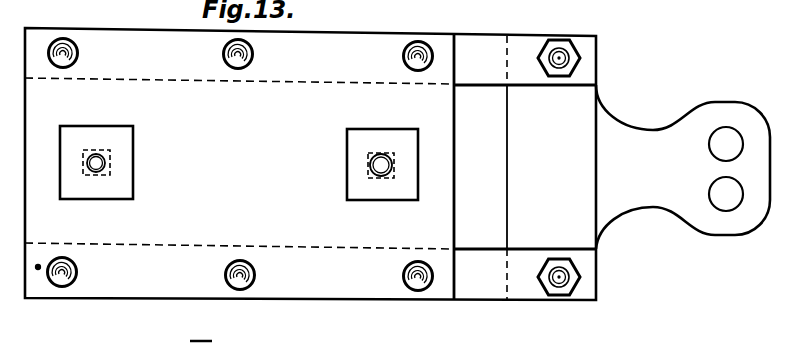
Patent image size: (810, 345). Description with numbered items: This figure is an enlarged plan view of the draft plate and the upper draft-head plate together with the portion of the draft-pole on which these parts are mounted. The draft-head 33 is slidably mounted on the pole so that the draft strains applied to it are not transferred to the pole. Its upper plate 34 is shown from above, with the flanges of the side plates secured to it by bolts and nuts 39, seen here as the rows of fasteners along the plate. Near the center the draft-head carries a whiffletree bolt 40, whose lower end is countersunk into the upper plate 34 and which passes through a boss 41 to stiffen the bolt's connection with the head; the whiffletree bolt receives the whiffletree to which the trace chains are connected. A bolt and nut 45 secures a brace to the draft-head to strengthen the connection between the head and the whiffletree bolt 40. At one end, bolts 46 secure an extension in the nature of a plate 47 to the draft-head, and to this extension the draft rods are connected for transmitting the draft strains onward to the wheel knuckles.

The draft-head 33 is at (182, 6).
The upper plate 34 is at (344, 40).
The bolts and nuts 39 is at (403, 56).
The whiffletree bolt 40 is at (105, 163).
The boss 41 is at (122, 143).
The bolt and nut 45 is at (370, 167).
The bolts 46 is at (581, 58).
The plate 47 is at (666, 131).